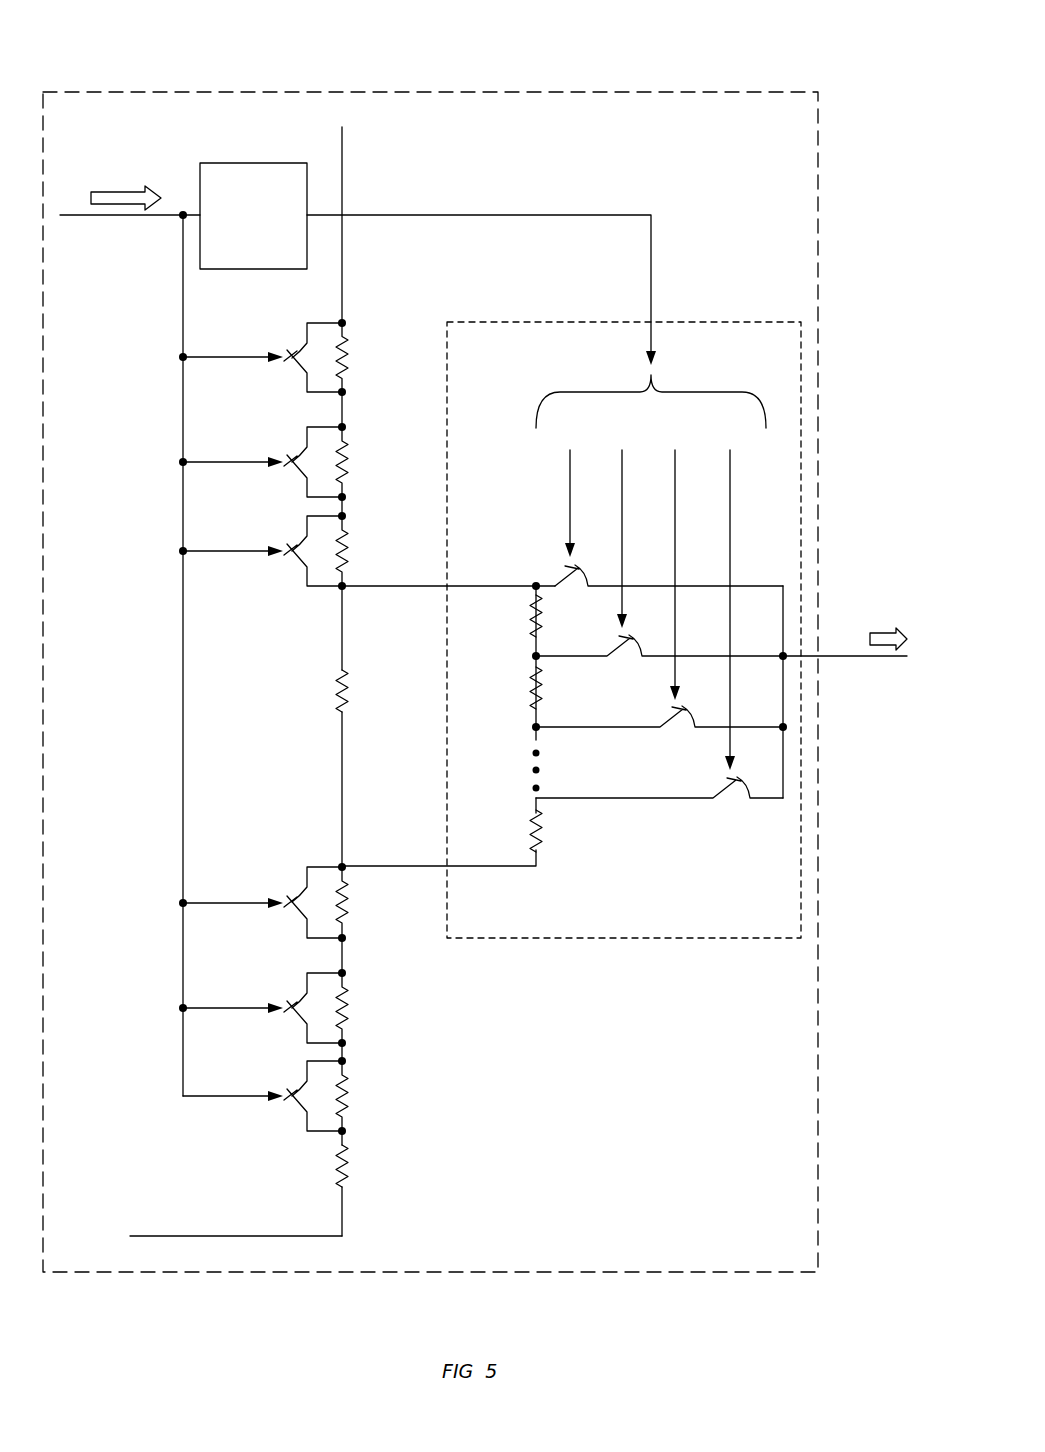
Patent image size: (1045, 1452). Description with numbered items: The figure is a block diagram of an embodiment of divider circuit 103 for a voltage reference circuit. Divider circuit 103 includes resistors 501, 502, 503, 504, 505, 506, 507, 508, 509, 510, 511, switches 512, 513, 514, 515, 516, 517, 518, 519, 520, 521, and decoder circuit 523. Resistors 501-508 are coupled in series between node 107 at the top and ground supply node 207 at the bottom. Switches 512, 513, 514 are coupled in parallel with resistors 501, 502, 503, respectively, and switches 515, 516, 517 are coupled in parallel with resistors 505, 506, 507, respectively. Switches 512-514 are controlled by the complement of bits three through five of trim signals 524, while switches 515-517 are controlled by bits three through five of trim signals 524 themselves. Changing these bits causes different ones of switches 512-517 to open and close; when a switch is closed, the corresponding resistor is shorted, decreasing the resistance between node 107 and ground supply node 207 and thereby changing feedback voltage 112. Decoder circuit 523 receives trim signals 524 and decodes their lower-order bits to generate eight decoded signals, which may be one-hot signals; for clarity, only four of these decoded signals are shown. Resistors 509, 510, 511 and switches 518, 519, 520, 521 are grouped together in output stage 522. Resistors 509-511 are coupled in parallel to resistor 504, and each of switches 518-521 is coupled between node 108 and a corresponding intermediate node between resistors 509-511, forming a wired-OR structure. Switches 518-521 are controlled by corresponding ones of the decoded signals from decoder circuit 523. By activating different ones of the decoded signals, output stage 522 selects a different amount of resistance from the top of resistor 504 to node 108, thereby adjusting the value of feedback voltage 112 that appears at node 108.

The divider circuit 103 is at (762, 90).
The node 107 is at (343, 145).
The node 108 is at (845, 657).
The feedback voltage 112 is at (882, 628).
The ground supply node 207 is at (236, 1212).
The resistor 501 is at (349, 358).
The resistor 502 is at (349, 463).
The resistor 503 is at (349, 552).
The resistor 504 is at (336, 692).
The resistor 505 is at (349, 903).
The resistor 506 is at (349, 1009).
The resistor 507 is at (349, 1097).
The resistor 508 is at (334, 1168).
The resistor 509 is at (528, 622).
The resistor 510 is at (528, 692).
The resistor 511 is at (528, 832).
The switch 512 is at (288, 337).
The switch 513 is at (288, 443).
The switch 514 is at (288, 531).
The switch 515 is at (288, 883).
The switch 516 is at (288, 989).
The switch 517 is at (288, 1077).
The switch 518 is at (572, 596).
The switch 519 is at (626, 666).
The switch 520 is at (679, 737).
The switch 521 is at (734, 808).
The output stage 522 is at (768, 320).
The decoder circuit 523 is at (483, 466).
The trim signals 524 is at (123, 191).